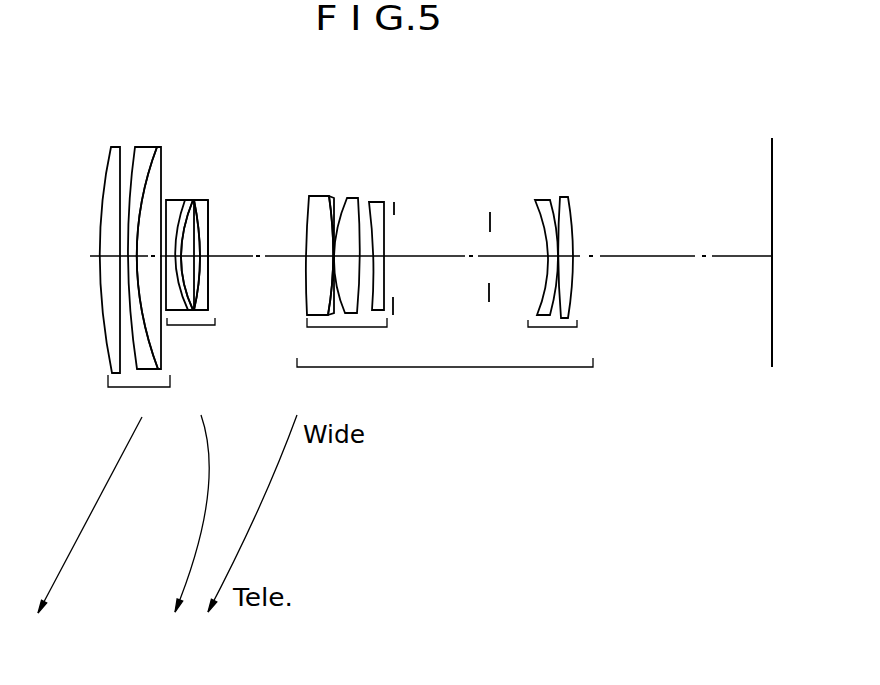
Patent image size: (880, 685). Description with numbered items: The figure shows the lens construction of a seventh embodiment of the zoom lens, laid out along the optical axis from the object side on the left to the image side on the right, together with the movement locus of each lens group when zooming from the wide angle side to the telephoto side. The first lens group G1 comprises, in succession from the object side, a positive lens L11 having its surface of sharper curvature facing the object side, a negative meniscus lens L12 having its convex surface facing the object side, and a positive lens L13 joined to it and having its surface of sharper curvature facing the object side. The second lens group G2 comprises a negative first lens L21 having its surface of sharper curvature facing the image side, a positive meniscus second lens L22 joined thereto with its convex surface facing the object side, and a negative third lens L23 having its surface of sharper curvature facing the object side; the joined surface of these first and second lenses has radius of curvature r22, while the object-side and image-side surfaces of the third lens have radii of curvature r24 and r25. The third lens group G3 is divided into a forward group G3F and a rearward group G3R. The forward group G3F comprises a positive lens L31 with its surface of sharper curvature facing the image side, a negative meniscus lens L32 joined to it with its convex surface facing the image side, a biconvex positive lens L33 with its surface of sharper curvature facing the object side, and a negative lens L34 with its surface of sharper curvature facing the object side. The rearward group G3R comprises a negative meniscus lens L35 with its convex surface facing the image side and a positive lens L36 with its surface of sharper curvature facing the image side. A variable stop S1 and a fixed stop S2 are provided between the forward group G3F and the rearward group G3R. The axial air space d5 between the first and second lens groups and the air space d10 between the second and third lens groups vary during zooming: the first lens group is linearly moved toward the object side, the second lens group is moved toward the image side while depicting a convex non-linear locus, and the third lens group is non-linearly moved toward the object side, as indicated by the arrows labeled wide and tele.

The positive lens L11 is at (112, 152).
The negative meniscus lens L12 is at (143, 152).
The positive lens L13 is at (163, 157).
The negative first lens L21 is at (173, 202).
The positive meniscus second lens L22 is at (187, 202).
The negative third lens L23 is at (207, 202).
The positive lens L31 is at (310, 200).
The negative meniscus lens L32 is at (327, 198).
The biconvex positive lens L33 is at (353, 200).
The negative lens L34 is at (377, 203).
The negative meniscus lens L35 is at (542, 200).
The positive lens L36 is at (567, 195).
The radius of curvature of the joined surface r22 is at (190, 223).
The radius of curvature of the object-side surface of the third lens r24 is at (196, 244).
The radius of curvature of the image-side surface of the third lens r25 is at (208, 300).
The air space between the first and second lens groups d5 is at (165, 262).
The air space between the second and third lens groups d10 is at (250, 261).
The variable stop S1 is at (397, 207).
The fixed stop S2 is at (487, 292).
The first lens group G1 is at (135, 250).
The second lens group G2 is at (181, 222).
The third lens group G3 is at (452, 245).
The forward group G3F is at (375, 224).
The rearward group G3R is at (561, 247).